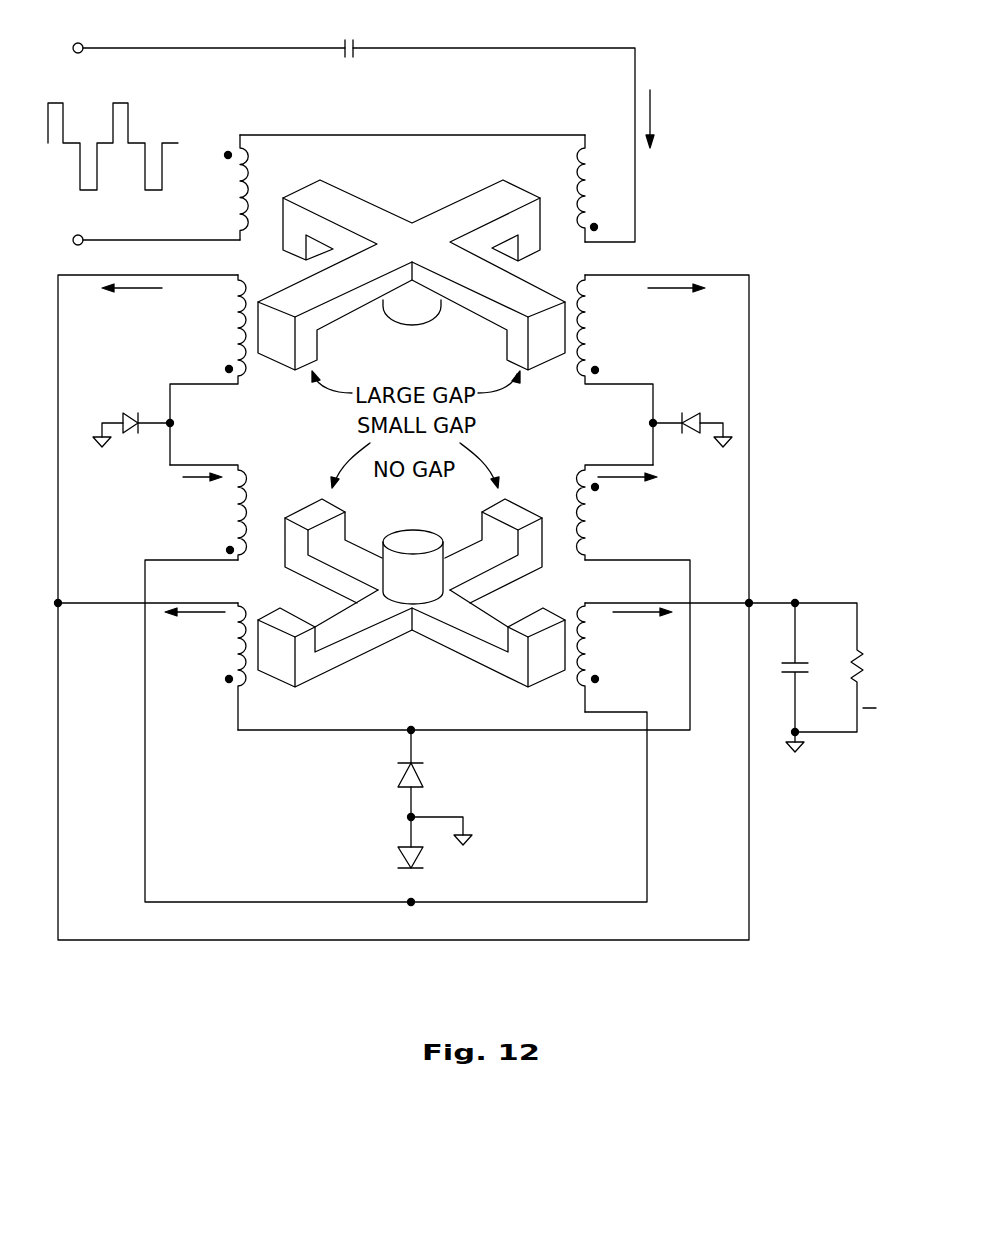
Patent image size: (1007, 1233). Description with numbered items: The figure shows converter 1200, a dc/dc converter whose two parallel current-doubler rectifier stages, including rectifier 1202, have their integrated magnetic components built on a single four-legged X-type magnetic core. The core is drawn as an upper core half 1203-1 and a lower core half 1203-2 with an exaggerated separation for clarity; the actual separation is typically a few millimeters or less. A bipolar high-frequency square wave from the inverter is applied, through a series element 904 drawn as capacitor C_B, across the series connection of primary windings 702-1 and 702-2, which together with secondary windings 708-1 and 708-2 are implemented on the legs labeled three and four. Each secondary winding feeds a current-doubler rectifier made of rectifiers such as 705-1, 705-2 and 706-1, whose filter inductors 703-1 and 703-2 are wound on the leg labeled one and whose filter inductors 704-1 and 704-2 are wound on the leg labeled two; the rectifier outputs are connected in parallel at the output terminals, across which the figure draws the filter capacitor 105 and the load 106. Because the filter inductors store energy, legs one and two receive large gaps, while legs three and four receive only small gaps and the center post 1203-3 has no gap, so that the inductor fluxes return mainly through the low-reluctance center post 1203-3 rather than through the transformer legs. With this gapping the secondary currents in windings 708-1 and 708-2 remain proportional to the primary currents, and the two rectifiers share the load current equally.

The blocking capacitor 904 is at (355, 45).
The primary winding 702-1 is at (580, 152).
The primary winding 702-2 is at (244, 187).
The converter 1200 is at (738, 207).
The rectifier 1202 is at (676, 754).
The core half 1203-1 is at (407, 242).
The core half 1203-2 is at (387, 645).
The center post 1203-3 is at (402, 327).
The filter inductor 703-1 is at (590, 303).
The filter inductor 703-2 is at (590, 635).
The filter inductor 704-1 is at (227, 678).
The filter inductor 704-2 is at (237, 302).
The rectifier 705-1 is at (703, 413).
The rectifier 705-2 is at (122, 428).
The rectifier 706-1 is at (423, 780).
The secondary winding 708-1 is at (593, 493).
The secondary winding 708-2 is at (248, 480).
The filter capacitor 105 is at (802, 660).
The load resistor 106 is at (862, 665).